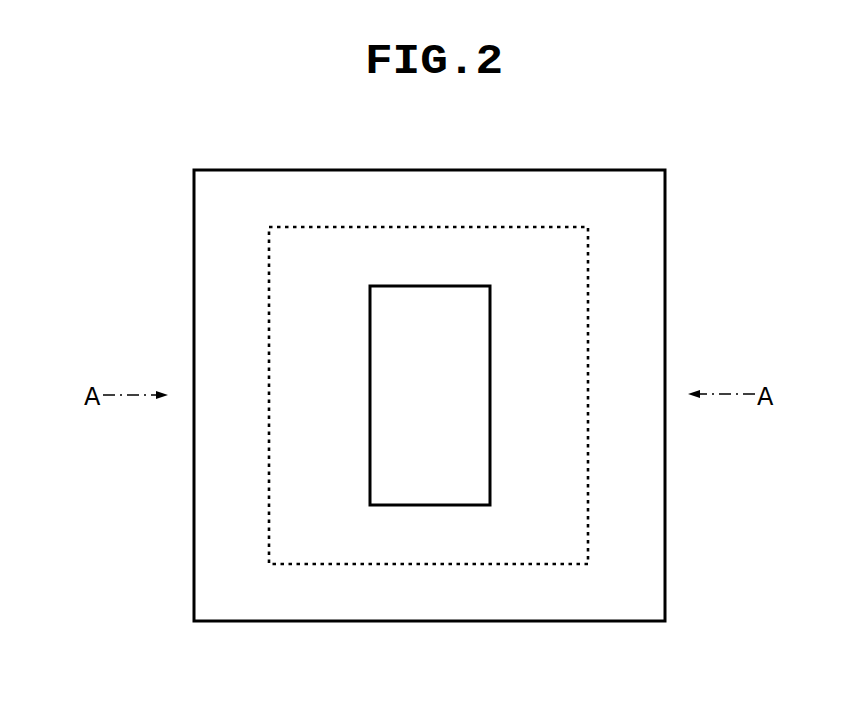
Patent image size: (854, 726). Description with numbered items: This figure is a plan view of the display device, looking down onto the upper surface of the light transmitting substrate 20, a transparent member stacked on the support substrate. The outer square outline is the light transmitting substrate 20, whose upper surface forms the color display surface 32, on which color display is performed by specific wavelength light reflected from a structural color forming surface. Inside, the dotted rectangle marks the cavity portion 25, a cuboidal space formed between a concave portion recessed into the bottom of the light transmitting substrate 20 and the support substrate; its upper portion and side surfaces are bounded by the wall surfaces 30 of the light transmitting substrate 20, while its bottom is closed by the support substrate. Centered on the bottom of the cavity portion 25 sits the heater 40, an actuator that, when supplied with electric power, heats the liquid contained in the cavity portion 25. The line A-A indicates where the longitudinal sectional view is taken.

The light transmitting substrate 20 is at (665, 195).
The cavity portion 25 is at (532, 253).
The wall surfaces 30 is at (588, 298).
The color display surface 32 is at (538, 540).
The heater 40 is at (430, 286).